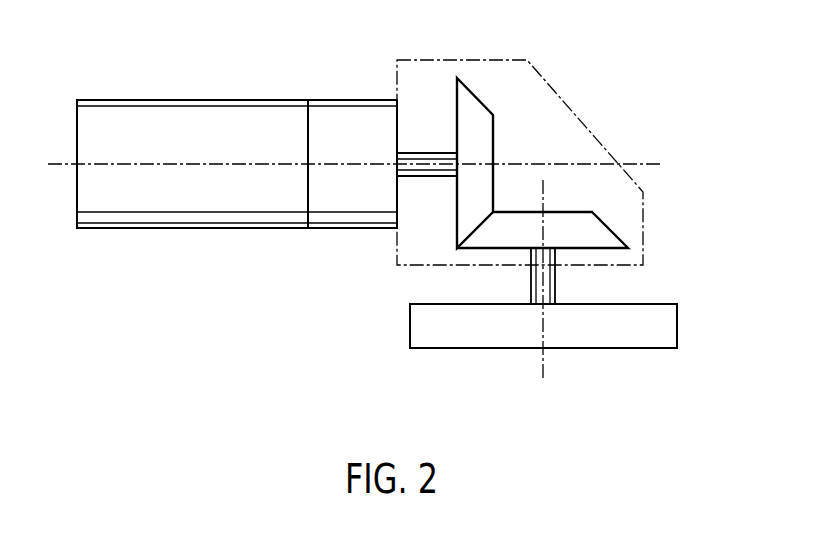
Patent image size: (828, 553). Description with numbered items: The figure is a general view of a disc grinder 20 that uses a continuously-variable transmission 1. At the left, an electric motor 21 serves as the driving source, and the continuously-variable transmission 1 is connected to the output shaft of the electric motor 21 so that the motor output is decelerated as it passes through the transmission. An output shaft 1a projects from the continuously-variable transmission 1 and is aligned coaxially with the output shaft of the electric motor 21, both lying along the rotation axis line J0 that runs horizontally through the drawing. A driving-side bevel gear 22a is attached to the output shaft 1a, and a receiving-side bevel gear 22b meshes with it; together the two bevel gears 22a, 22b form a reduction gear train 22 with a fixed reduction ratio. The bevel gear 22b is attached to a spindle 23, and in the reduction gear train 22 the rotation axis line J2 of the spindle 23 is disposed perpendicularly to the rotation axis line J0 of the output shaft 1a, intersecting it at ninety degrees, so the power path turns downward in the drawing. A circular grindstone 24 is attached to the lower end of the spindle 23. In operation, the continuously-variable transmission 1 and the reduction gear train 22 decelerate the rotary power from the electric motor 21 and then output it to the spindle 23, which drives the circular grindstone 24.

The continuously-variable transmission 1 is at (346, 132).
The output shaft 1a is at (410, 157).
The disc grinder 20 is at (603, 90).
The electric motor 21 is at (185, 128).
The reduction gear train 22 is at (593, 133).
The bevel gear 22a is at (473, 120).
The bevel gear 22b is at (585, 233).
The spindle 23 is at (547, 285).
The circular grindstone 24 is at (437, 337).
The rotation axis line J0 is at (370, 165).
The rotation axis line J2 is at (543, 298).